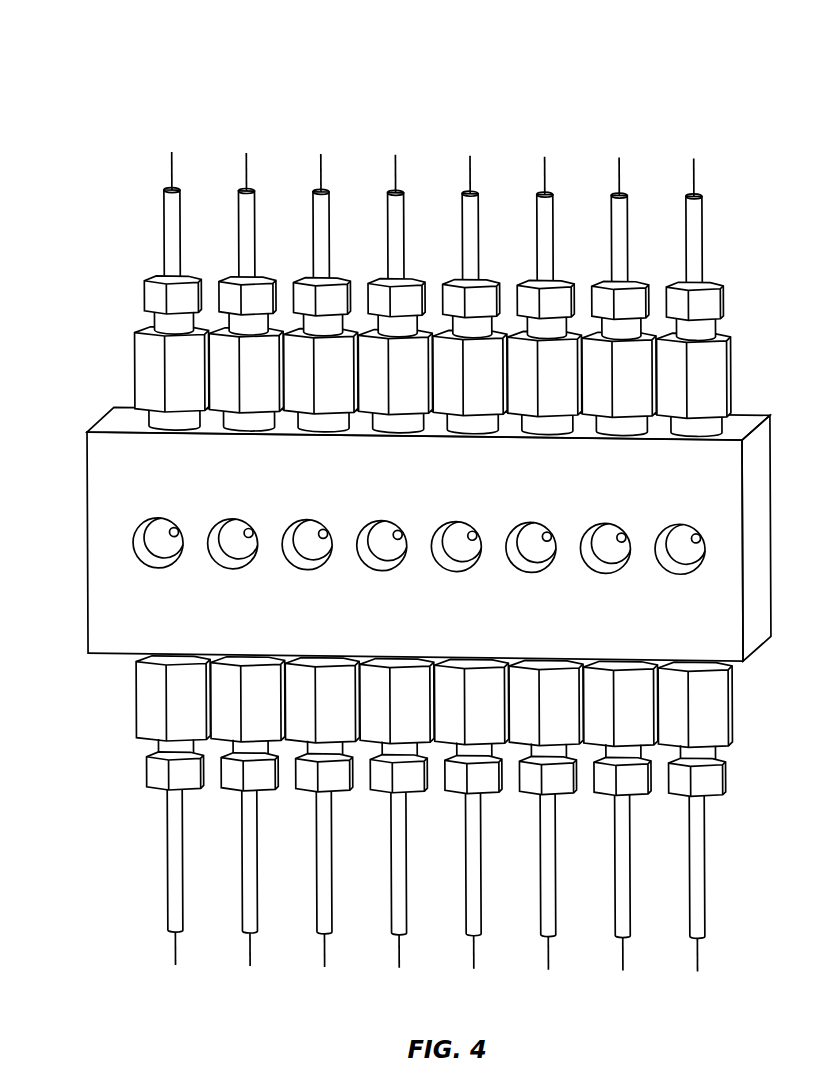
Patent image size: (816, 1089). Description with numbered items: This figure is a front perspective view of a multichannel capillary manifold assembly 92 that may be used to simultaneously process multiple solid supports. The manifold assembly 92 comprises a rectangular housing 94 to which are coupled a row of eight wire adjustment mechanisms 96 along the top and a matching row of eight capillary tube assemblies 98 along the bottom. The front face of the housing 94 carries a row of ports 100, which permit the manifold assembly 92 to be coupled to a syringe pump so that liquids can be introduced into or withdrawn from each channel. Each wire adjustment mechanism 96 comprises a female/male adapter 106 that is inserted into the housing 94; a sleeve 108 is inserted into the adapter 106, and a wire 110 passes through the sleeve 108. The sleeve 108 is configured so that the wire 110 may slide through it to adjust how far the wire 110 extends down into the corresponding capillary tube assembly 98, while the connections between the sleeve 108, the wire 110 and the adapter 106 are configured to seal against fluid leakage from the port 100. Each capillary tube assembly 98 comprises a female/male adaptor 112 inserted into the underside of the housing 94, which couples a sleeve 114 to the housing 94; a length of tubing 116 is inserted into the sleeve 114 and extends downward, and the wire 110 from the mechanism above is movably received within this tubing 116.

The manifold assembly 92 is at (668, 38).
The housing 94 is at (96, 542).
The wire adjustment mechanism 96 is at (150, 284).
The capillary tube assembly 98 is at (230, 712).
The port 100 is at (145, 557).
The female/male adapter 106 is at (456, 292).
The sleeve 108 is at (700, 230).
The wire 110 is at (172, 164).
The female/male adaptor 112 is at (449, 814).
The sleeve 114 is at (728, 831).
The tubing 116 is at (728, 950).